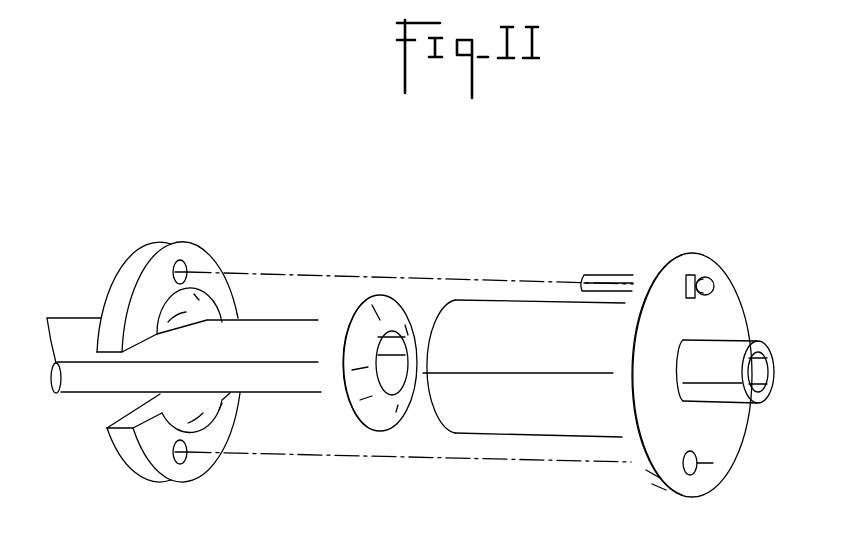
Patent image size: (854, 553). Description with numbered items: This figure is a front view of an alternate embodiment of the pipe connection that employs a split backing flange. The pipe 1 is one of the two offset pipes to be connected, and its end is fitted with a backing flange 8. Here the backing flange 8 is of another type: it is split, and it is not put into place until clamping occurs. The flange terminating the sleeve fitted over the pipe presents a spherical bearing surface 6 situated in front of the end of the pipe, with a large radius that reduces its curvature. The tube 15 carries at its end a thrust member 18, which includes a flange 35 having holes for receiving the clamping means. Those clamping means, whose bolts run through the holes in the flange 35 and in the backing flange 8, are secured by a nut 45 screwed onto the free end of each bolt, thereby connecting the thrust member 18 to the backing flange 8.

The pipe 1 is at (89, 323).
The spherical bearing surface 6 is at (399, 318).
The backing flange 8 is at (200, 267).
The tube 15 is at (717, 347).
The thrust member 18 is at (519, 304).
The flange 35 is at (700, 437).
The nut 45 is at (699, 273).